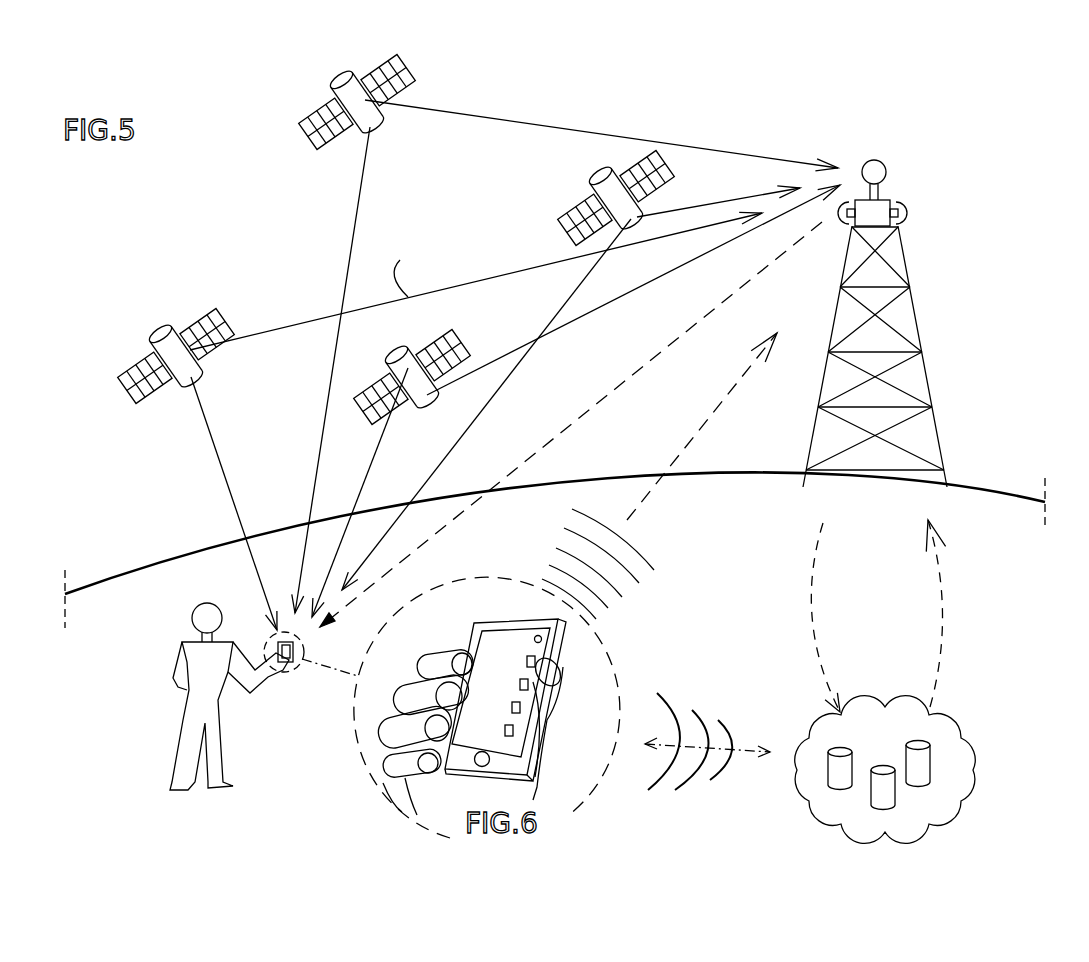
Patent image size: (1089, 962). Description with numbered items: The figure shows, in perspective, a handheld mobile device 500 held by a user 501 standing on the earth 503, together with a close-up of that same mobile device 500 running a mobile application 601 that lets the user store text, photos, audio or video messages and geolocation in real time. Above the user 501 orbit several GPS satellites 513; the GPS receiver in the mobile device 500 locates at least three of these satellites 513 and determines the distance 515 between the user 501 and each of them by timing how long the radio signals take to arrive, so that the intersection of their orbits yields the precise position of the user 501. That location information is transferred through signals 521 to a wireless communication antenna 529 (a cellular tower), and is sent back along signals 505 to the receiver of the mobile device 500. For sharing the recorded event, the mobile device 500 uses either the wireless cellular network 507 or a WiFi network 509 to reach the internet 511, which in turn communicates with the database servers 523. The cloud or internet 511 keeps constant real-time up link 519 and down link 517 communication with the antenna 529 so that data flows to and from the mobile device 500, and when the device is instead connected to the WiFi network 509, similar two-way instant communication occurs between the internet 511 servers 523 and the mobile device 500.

In FIG. 5, the mobile device 500 is at (290, 672).
In FIG. 6, the mobile device 500 is at (538, 714).
In FIG. 5, the user 501 is at (197, 697).
In FIG. 5, the earth 503 is at (173, 557).
In FIG. 5, the signals 505 is at (583, 411).
In FIG. 5, the wireless cellular network 507 is at (710, 413).
In FIG. 5, the WiFi network 509 is at (657, 747).
In FIG. 5, the internet 511 is at (878, 708).
In FIG. 5, the satellites 513 is at (332, 82).
In FIG. 5, the distance 515 is at (318, 454).
In FIG. 5, the down link communication 517 is at (812, 584).
In FIG. 5, the up link communication 519 is at (943, 613).
In FIG. 5, the signals 521 is at (450, 110).
In FIG. 5, the database servers 523 is at (707, 776).
In FIG. 5, the wireless communication antenna 529 is at (897, 203).
In FIG. 6, the mobile application 601 is at (481, 643).